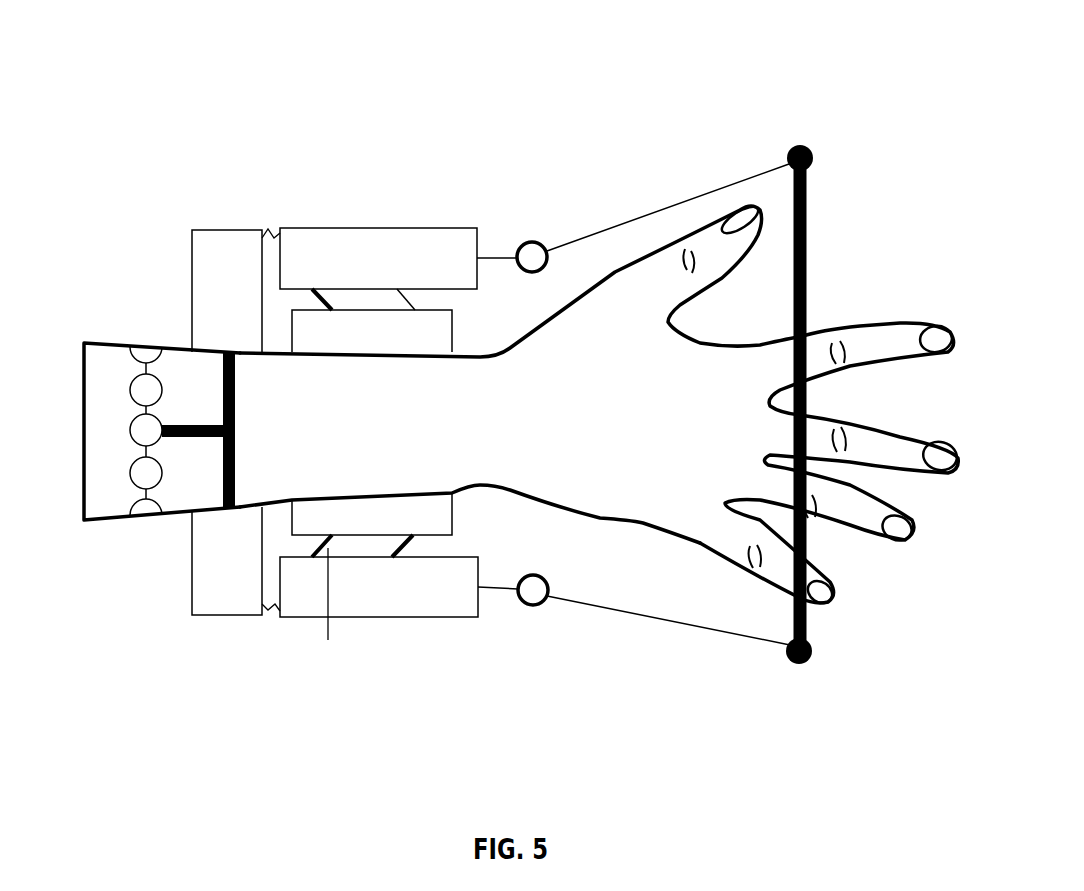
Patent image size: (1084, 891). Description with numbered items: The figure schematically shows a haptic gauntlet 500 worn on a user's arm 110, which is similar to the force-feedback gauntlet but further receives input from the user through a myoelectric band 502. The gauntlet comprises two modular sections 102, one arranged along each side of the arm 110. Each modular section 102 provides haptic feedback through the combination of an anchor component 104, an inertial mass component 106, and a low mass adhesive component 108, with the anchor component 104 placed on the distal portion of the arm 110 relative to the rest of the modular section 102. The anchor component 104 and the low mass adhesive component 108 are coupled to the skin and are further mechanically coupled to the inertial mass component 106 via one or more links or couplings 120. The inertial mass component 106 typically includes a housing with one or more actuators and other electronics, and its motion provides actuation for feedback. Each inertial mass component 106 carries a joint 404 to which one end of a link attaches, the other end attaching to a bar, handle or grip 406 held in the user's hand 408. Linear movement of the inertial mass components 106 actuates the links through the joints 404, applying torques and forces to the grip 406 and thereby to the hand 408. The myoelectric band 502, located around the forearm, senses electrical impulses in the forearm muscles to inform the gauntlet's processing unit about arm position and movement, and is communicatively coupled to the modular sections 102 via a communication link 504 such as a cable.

The haptic gauntlet 500 is at (567, 86).
The modular section 102 is at (203, 190).
The anchor component 104 is at (243, 303).
The inertial mass component 106 is at (390, 270).
The low mass adhesive component 108 is at (390, 343).
The arm 110 is at (380, 434).
The links or couplings 120 is at (312, 297).
The joint 404 is at (790, 152).
The grip 406 is at (812, 270).
The hand 408 is at (678, 434).
The myoelectric band 502 is at (135, 383).
The communication link 504 is at (233, 458).